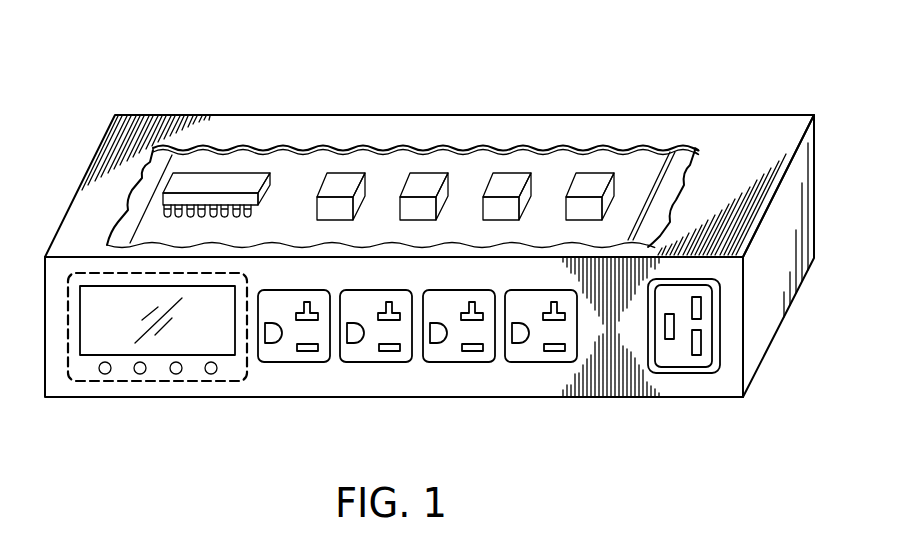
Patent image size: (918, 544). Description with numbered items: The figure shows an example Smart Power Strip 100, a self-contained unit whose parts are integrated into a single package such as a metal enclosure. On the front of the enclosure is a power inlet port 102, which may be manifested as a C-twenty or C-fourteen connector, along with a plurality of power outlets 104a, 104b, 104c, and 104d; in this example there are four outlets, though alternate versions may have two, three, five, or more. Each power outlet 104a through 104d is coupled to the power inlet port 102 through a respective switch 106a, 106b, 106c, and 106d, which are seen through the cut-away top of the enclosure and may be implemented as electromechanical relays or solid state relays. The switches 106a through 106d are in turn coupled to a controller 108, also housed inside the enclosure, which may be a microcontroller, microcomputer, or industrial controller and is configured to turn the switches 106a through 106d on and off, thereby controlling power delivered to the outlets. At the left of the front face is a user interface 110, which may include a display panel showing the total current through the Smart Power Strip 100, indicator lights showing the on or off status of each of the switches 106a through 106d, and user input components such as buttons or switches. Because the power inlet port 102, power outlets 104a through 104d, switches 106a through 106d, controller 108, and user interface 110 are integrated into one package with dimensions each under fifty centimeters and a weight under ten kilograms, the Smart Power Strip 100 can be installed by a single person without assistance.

The Smart Power Strip 100 is at (101, 63).
The power inlet port 102 is at (683, 373).
The power outlet 104a is at (293, 362).
The power outlet 104b is at (377, 362).
The power outlet 104c is at (460, 363).
The power outlet 104d is at (540, 363).
The switch 106a is at (340, 186).
The switch 106b is at (425, 186).
The switch 106c is at (512, 186).
The switch 106d is at (600, 186).
The controller 108 is at (210, 186).
The user interface 110 is at (123, 391).